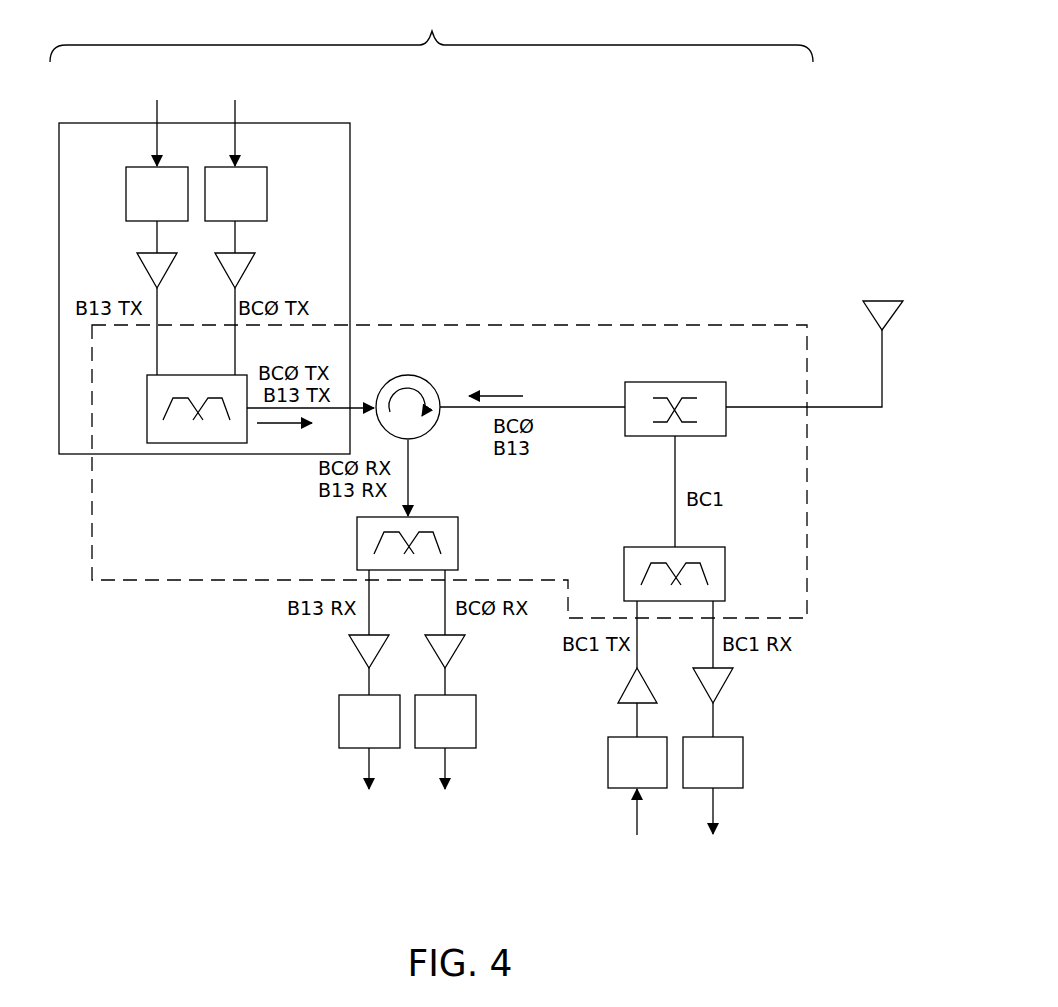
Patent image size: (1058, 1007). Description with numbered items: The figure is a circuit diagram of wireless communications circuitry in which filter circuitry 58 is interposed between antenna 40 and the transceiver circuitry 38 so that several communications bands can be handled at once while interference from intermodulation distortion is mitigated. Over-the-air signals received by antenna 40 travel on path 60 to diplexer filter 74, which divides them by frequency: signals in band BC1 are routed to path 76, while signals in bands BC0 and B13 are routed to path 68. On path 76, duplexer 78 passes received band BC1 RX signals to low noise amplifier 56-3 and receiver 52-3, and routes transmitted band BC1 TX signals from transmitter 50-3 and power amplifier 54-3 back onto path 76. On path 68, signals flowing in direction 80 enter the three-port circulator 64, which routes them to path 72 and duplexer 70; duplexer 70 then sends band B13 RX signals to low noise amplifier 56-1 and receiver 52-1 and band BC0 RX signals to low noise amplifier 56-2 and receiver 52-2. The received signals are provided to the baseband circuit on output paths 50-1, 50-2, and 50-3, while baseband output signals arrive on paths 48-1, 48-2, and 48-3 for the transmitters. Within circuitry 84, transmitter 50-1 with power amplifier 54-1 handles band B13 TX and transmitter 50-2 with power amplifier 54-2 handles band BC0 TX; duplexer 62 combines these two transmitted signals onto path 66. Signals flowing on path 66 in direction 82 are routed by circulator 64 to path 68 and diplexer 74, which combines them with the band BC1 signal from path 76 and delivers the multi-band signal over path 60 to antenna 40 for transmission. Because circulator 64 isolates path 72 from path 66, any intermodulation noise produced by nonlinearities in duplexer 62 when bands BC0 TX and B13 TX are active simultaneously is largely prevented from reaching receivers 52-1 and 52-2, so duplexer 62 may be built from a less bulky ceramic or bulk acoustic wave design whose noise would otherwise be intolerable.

The transceiver circuitry 38 is at (431, 35).
The antenna 40 is at (880, 300).
The path 48-1 is at (161, 110).
The path 48-2 is at (239, 110).
The path 48-3 is at (638, 817).
The transmitter 50-1 is at (126, 195).
The transmitter 50-2 is at (267, 195).
The transmitter 50-3 is at (608, 760).
The receiver 52-1 is at (339, 724).
The receiver 52-2 is at (476, 723).
The receiver 52-3 is at (743, 760).
The power amplifier 54-1 is at (142, 267).
The power amplifier 54-2 is at (250, 267).
The power amplifier 54-3 is at (628, 688).
The low noise amplifier 56-1 is at (355, 650).
The low noise amplifier 56-2 is at (459, 651).
The low noise amplifier 56-3 is at (725, 683).
The filter circuitry 58 is at (489, 323).
The path 60 is at (842, 409).
The duplexer 62 is at (132, 419).
The circulator 64 is at (413, 376).
The path 66 is at (292, 410).
The path 68 is at (557, 406).
The duplexer 70 is at (460, 529).
The path 72 is at (411, 465).
The diplexer filter 74 is at (676, 380).
The path 76 is at (675, 483).
The duplexer 78 is at (645, 546).
The direction 80 is at (496, 395).
The direction 82 is at (269, 427).
The circuitry 84 is at (350, 190).